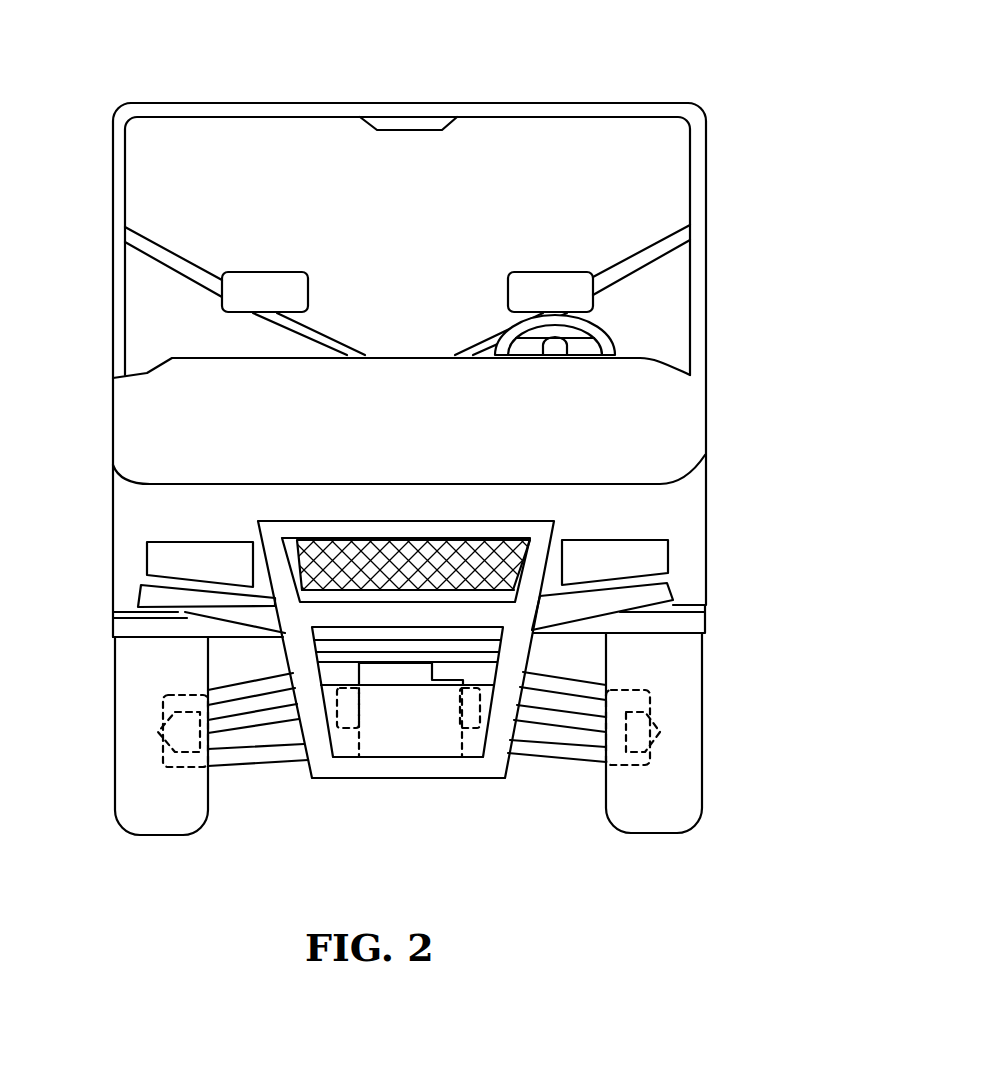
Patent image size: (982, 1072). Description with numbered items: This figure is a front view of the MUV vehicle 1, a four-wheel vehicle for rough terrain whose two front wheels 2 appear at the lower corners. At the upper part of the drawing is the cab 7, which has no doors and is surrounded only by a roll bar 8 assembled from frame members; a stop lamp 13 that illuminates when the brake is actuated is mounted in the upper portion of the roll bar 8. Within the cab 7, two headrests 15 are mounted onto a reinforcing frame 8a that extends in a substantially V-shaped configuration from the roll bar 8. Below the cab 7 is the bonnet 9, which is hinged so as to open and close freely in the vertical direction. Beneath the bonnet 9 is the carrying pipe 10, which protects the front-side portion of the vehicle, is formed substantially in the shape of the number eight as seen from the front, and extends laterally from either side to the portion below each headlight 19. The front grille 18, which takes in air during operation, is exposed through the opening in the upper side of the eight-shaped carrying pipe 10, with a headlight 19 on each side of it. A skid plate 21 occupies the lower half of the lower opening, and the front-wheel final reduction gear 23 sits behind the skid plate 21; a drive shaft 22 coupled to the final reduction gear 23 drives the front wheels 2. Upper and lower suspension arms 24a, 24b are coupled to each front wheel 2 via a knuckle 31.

The MUV vehicle 1 is at (762, 75).
The front wheel 2 is at (160, 826).
The cab 7 is at (421, 219).
The roll bar 8 is at (707, 183).
The reinforcing frame 8a is at (170, 251).
The bonnet 9 is at (668, 423).
The carrying pipe 10 is at (207, 603).
The stop lamp 13 is at (452, 127).
The headrest 15 is at (267, 272).
The front grille 18 is at (485, 548).
The headlight 19 is at (152, 562).
The skid plate 21 is at (345, 745).
The drive shaft 22 is at (255, 720).
The front-wheel final reduction gear 23 is at (403, 735).
The upper suspension arm 24a is at (232, 690).
The lower suspension arm 24b is at (283, 752).
The knuckle 31 is at (157, 735).